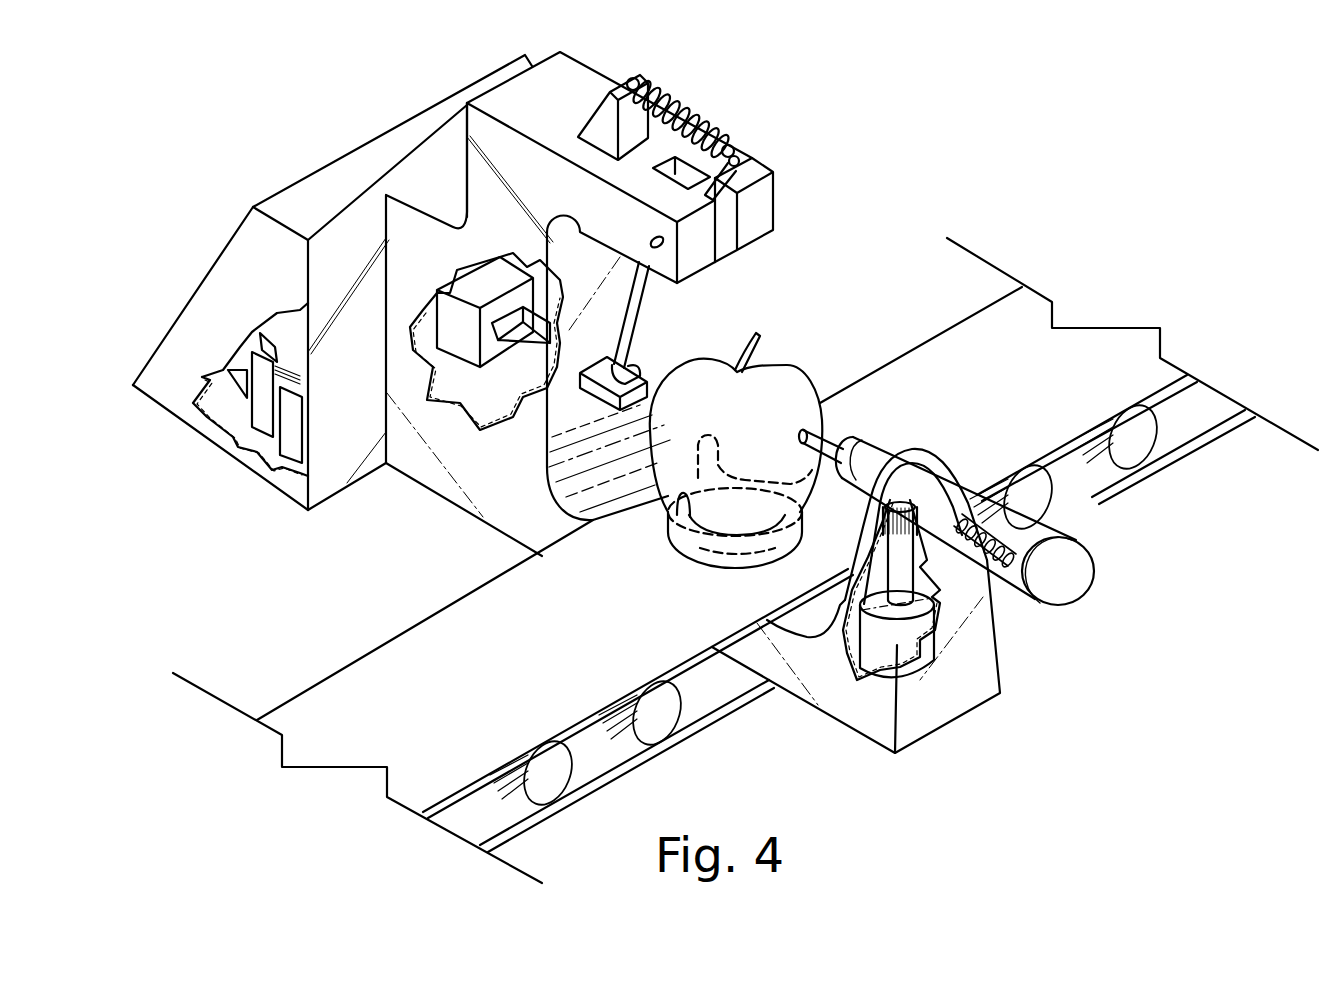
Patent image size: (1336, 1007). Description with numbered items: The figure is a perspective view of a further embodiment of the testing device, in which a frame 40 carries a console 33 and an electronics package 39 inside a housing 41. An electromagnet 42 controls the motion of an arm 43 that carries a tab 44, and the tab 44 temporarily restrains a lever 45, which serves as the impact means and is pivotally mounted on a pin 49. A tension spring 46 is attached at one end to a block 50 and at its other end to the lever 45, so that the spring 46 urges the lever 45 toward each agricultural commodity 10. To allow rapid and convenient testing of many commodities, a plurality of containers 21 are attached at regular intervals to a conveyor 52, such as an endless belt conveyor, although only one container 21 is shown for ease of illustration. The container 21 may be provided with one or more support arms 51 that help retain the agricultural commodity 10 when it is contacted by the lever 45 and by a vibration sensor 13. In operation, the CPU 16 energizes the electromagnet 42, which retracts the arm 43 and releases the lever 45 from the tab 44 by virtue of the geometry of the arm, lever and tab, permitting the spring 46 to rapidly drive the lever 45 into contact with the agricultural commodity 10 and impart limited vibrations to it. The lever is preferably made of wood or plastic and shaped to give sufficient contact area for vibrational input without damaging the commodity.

The agricultural commodity 10 is at (787, 365).
The vibration sensor 13 is at (826, 415).
The CPU 16 is at (252, 363).
The container 21 is at (733, 568).
The console 33 is at (228, 242).
The electronics package 39 is at (248, 437).
The frame 40 is at (425, 470).
The housing 41 is at (160, 314).
The electromagnet 42 is at (466, 334).
The arm 43 is at (600, 400).
The tab 44 is at (648, 372).
The lever 45 is at (665, 313).
The tension spring 46 is at (685, 103).
The pin 49 is at (652, 241).
The block 50 is at (602, 95).
The support arm 51 is at (668, 503).
The conveyor 52 is at (474, 712).